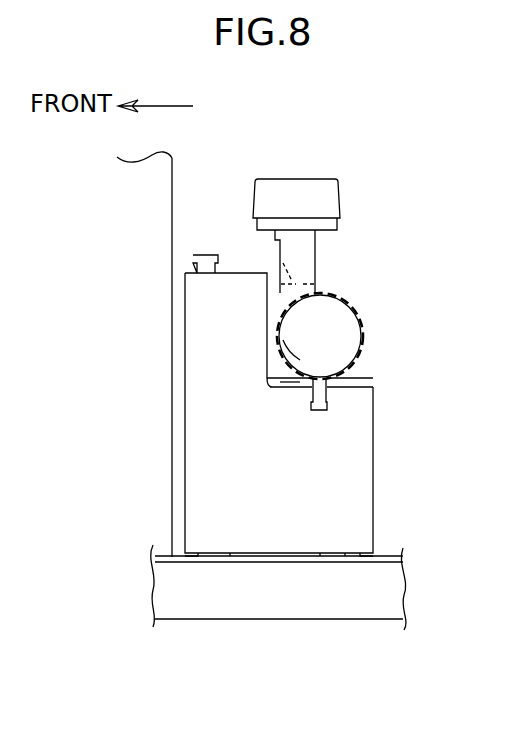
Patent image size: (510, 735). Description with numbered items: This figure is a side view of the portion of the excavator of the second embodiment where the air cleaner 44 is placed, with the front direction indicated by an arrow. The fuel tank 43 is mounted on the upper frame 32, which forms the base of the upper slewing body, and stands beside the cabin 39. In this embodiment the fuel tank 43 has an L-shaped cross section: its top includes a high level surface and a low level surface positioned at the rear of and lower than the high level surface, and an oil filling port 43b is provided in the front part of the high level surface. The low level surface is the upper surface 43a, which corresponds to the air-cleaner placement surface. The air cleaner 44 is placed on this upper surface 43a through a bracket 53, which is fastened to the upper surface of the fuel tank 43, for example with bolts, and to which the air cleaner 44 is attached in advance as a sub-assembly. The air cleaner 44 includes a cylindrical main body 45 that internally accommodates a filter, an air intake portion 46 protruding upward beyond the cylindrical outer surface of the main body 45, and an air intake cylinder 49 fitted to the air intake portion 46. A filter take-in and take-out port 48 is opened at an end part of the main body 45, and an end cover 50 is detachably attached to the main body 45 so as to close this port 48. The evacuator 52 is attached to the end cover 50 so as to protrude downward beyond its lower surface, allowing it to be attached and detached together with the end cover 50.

The upper frame 32 is at (380, 555).
The cabin 39 is at (172, 193).
The fuel tank 43 is at (373, 470).
The upper surface 43a is at (290, 379).
The oil filling port 43b is at (195, 263).
The air cleaner 44 is at (331, 284).
The main body 45 is at (362, 337).
The air intake portion 46 is at (278, 262).
The filter take-in and take-out port 48 is at (350, 308).
The air intake cylinder 49 is at (340, 198).
The end cover 50 is at (287, 347).
The evacuator 52 is at (320, 412).
The bracket 53 is at (357, 378).